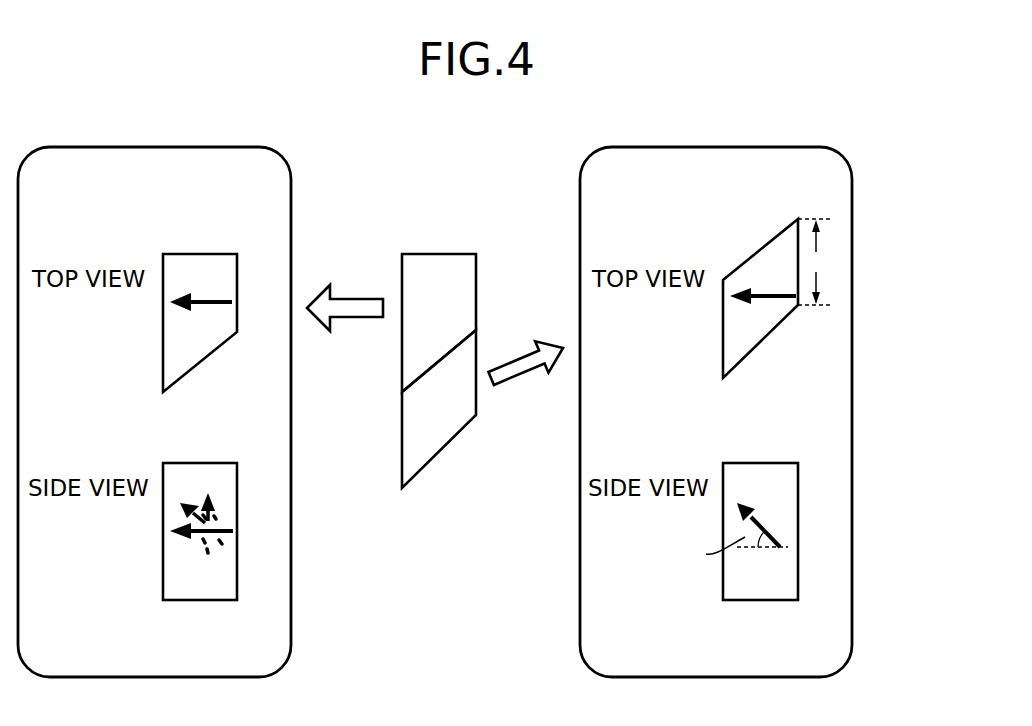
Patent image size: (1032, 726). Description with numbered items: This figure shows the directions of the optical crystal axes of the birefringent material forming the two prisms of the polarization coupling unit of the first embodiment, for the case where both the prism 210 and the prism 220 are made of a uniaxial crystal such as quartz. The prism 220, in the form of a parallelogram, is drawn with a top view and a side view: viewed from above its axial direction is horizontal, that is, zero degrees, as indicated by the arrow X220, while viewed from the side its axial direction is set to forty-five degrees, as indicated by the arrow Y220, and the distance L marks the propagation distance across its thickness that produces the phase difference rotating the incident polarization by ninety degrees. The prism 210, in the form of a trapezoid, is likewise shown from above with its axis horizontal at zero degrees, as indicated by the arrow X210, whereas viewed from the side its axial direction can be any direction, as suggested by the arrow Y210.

The prism 210 is at (476, 283).
The prism 220 is at (477, 405).
The arrow X210 is at (207, 304).
The arrow Y210 is at (233, 533).
The arrow X220 is at (767, 298).
The arrow Y220 is at (760, 521).